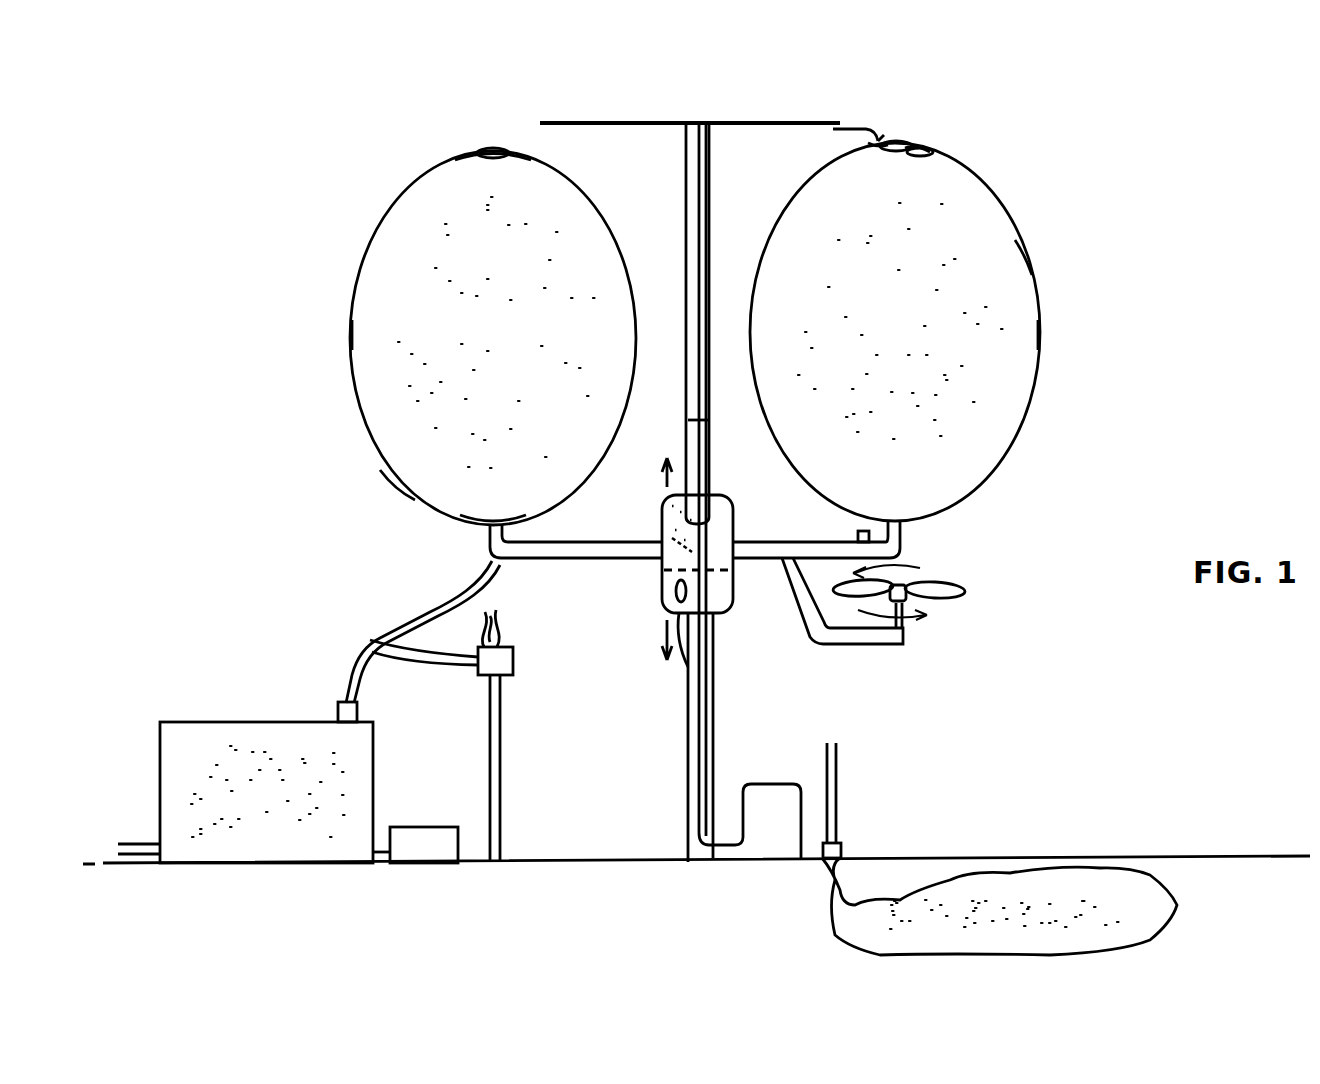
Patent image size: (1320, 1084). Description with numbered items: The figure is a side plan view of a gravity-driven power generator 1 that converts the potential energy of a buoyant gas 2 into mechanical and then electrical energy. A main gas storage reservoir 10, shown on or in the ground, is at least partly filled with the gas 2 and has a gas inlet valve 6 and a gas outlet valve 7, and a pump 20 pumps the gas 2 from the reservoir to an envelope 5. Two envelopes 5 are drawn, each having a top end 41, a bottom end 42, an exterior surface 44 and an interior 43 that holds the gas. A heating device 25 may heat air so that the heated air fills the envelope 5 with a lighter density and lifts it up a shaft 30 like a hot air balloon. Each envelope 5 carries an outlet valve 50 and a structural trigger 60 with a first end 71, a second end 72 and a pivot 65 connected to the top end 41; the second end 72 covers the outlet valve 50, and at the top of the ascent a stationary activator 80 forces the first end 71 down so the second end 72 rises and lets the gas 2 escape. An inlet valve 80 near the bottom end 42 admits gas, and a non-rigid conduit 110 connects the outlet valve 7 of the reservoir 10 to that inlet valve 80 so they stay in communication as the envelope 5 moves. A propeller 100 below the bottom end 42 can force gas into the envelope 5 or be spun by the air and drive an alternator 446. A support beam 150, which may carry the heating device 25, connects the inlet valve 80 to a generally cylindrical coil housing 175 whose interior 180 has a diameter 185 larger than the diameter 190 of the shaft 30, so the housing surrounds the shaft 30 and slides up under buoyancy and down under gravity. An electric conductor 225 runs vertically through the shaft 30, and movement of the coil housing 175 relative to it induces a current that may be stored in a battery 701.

The gravity-driven power generator 1 is at (325, 92).
The gas 2 is at (405, 372).
The envelope 5 is at (350, 270).
The gas inlet valve 6 is at (152, 843).
The gas outlet valve 7 is at (357, 714).
The main gas storage reservoir 10 is at (173, 721).
The pump 20 is at (440, 836).
The heating device 25 is at (858, 533).
The shaft 30 is at (713, 707).
The top end 41 is at (470, 154).
The bottom end 42 is at (487, 540).
The interior 43 is at (356, 333).
The exterior surface 44 is at (385, 470).
The outlet valve 50 is at (493, 148).
The structural trigger 60 is at (882, 134).
The pivot 65 is at (868, 143).
The first end 71 is at (850, 127).
The second end 72 is at (944, 116).
The activator / inlet valve 80 is at (835, 122).
The propeller 100 is at (910, 597).
The conduit 110 is at (348, 657).
The support beam 150 is at (565, 560).
The coil housing 175 is at (725, 583).
The interior 180 is at (662, 527).
The diameter 185 is at (657, 583).
The diameter 190 is at (695, 410).
The electric conductor 225 is at (695, 193).
The alternator 446 is at (920, 600).
The battery 701 is at (680, 652).